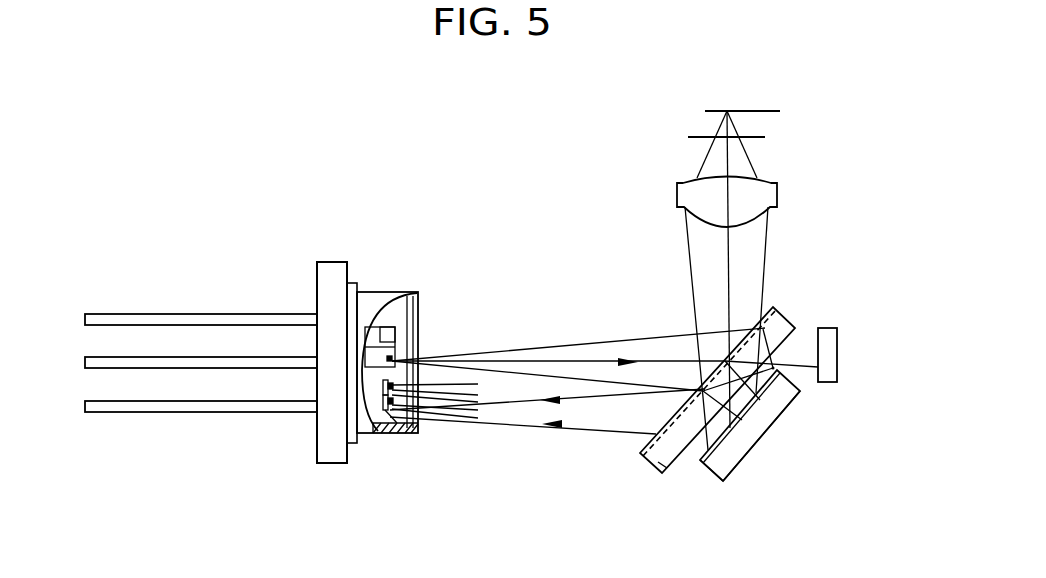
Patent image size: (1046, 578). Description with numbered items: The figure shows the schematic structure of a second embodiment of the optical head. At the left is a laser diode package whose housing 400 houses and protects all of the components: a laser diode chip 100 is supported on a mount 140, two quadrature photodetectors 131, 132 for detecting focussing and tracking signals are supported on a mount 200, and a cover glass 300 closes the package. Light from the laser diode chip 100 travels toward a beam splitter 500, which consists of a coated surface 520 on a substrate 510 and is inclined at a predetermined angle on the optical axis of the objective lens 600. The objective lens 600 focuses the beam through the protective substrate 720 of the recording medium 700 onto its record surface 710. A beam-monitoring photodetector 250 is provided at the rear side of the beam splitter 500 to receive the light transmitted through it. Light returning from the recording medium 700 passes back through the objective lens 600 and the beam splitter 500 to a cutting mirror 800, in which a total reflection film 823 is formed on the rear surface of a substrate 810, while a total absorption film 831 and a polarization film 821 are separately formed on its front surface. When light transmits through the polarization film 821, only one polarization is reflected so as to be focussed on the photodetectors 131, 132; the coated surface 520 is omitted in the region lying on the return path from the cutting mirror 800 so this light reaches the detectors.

The laser diode chip 100 is at (391, 357).
The quadrature photodetector 131 is at (390, 377).
The quadrature photodetector 132 is at (409, 429).
The mount 140 is at (390, 435).
The mount 200 is at (384, 328).
The beam-monitoring photodetector 250 is at (830, 357).
The cover glass 300 is at (416, 420).
The housing 400 is at (367, 435).
The beam splitter 500 is at (667, 440).
The substrate 510 is at (662, 474).
The coated surface 520 is at (643, 447).
The objective lens 600 is at (762, 197).
The recording medium 700 is at (751, 99).
The record surface 710 is at (715, 110).
The protective substrate 720 is at (710, 137).
The cutting mirror 800 is at (793, 423).
The substrate 810 is at (724, 472).
The polarization film 821 is at (699, 460).
The total reflection film 823 is at (786, 416).
The total absorption film 831 is at (773, 368).